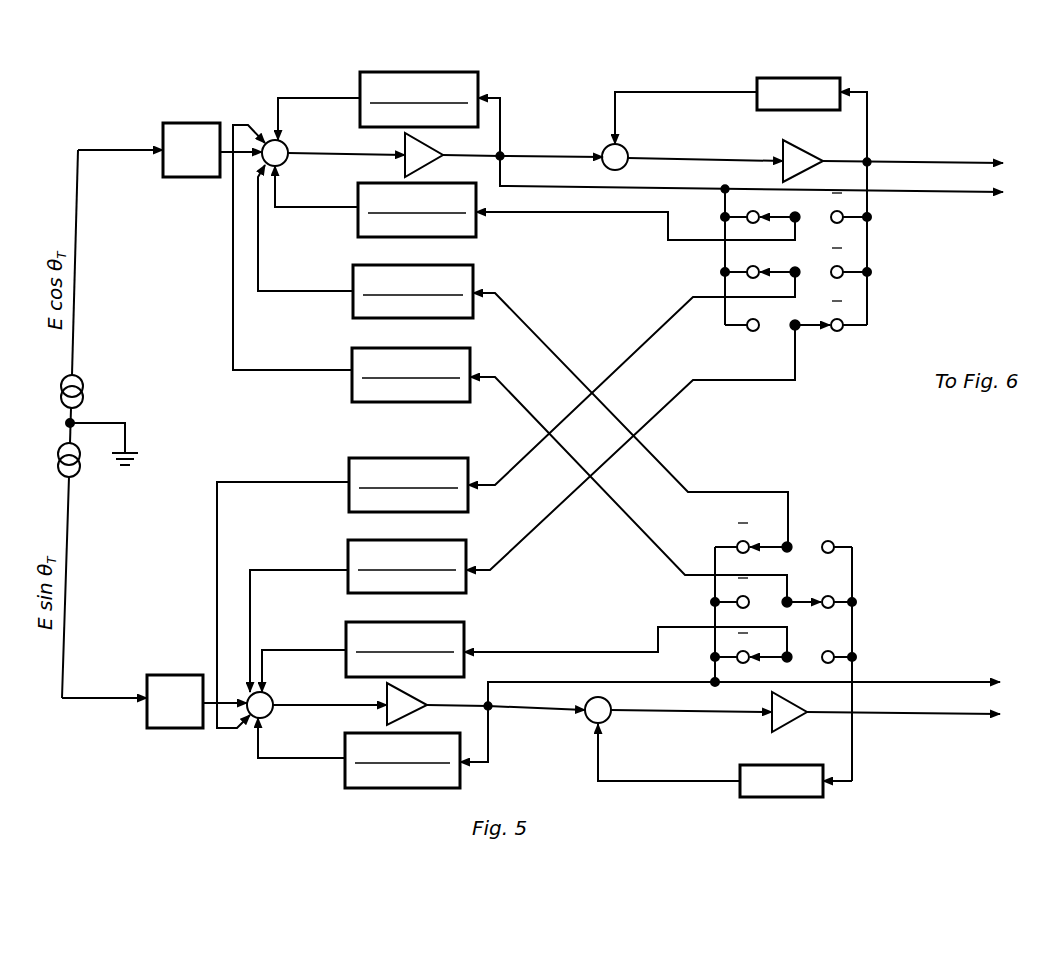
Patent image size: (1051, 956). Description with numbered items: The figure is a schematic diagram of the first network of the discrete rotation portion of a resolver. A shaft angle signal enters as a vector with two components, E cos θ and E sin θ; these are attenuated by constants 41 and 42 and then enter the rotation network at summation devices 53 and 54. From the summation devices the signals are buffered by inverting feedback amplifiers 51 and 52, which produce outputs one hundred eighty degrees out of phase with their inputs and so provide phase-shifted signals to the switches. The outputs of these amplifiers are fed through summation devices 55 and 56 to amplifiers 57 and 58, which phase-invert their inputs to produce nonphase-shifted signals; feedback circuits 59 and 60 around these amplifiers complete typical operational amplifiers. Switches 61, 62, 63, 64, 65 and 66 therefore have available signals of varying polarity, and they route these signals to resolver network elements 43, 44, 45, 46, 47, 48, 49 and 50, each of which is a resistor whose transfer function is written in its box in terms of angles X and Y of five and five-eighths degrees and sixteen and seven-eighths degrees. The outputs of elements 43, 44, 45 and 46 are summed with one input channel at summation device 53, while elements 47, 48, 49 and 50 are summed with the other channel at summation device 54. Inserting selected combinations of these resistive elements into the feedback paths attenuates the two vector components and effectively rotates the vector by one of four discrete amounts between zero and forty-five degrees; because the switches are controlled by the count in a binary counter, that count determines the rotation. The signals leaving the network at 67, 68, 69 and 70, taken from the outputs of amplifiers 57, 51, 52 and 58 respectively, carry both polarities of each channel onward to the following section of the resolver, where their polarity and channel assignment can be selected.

The constant 41 is at (178, 123).
The constant 42 is at (165, 675).
The resolver network element 43 is at (430, 72).
The resolver network element 44 is at (425, 183).
The resolver network element 45 is at (425, 265).
The resolver network element 46 is at (425, 348).
The resolver network element 47 is at (415, 458).
The resolver network element 48 is at (415, 540).
The resolver network element 49 is at (415, 622).
The resolver network element 50 is at (418, 733).
The inverting feedback amplifier 51 is at (430, 150).
The inverting feedback amplifier 52 is at (415, 698).
The summation device 53 is at (287, 143).
The summation device 54 is at (273, 695).
The summation device 55 is at (628, 146).
The summation device 56 is at (609, 719).
The amplifier 57 is at (805, 146).
The amplifier 58 is at (792, 720).
The feedback circuit 59 is at (818, 78).
The feedback circuit 60 is at (785, 797).
The switch 61 is at (796, 205).
The switch 62 is at (796, 260).
The switch 63 is at (796, 313).
The switch 64 is at (783, 547).
The switch 65 is at (783, 603).
The switch 66 is at (783, 658).
The signal 67 is at (929, 163).
The signal 68 is at (767, 180).
The signal 69 is at (760, 688).
The signal 70 is at (920, 714).